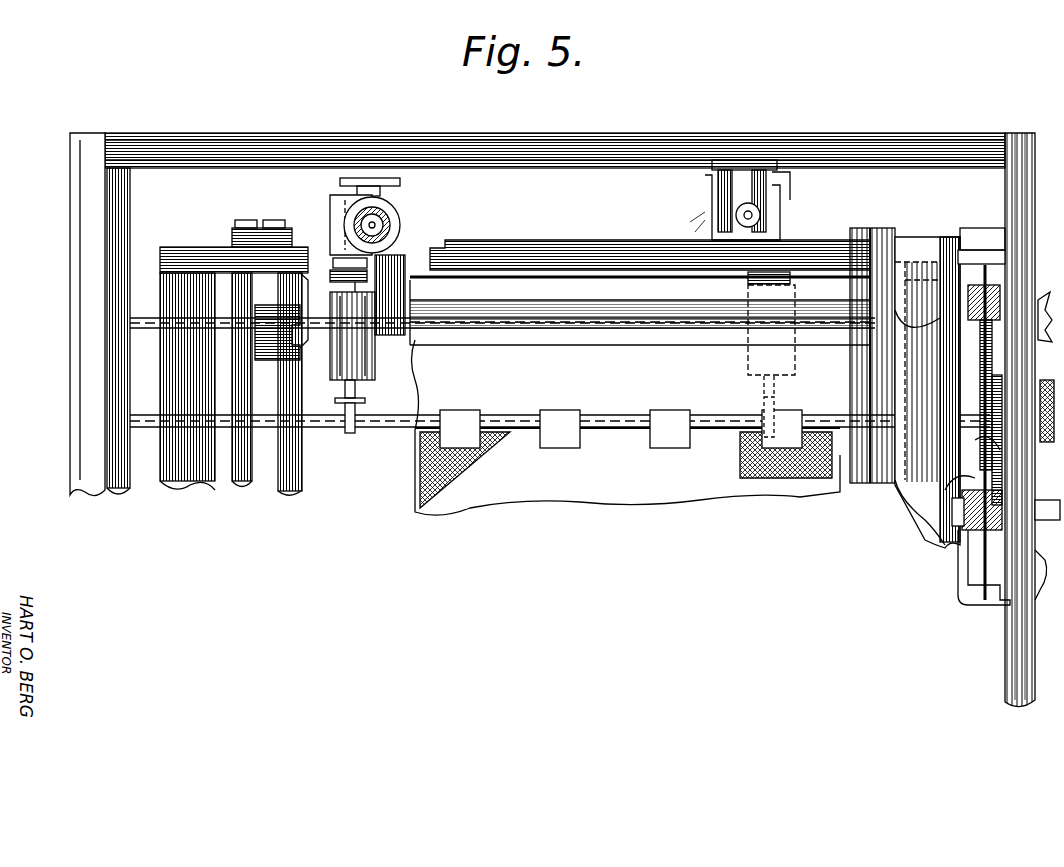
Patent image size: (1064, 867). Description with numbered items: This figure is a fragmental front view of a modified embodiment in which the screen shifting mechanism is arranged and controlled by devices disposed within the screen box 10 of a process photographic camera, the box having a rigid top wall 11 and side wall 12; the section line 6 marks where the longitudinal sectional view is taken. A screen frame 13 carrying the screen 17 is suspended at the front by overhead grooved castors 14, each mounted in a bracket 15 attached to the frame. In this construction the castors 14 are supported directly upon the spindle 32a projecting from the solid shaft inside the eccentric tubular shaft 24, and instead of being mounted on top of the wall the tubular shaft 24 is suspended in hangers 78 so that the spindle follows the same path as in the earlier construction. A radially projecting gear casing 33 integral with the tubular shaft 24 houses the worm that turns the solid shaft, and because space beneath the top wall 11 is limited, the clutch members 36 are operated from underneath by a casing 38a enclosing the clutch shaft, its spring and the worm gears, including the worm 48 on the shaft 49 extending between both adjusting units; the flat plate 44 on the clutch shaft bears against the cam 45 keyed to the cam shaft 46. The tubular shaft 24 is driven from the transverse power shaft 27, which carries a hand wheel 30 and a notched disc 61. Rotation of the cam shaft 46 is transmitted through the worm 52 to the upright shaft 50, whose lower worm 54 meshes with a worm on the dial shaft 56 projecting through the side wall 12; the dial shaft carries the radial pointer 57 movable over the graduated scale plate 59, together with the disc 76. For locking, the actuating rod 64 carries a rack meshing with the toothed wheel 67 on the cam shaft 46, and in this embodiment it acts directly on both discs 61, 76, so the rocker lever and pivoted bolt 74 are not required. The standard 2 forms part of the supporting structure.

The section line 6— 6 is at (740, 170).
The top wall 11 is at (522, 160).
The side wall 12 is at (70, 400).
The screen frame 13 is at (580, 345).
The screen box 10 is at (600, 427).
The screen 17 is at (420, 492).
The hanger 78 is at (385, 187).
The gear casing 33 is at (330, 218).
The tubular shaft 24 is at (360, 201).
The spindle 32a is at (374, 224).
The clutch 36 is at (330, 280).
The casing 38a is at (375, 355).
The flat plate 44 is at (335, 400).
The cam 45 is at (355, 412).
The cam shaft 46 is at (775, 402).
The worm 48 is at (410, 336).
The shaft 49 is at (318, 430).
The grooved castor 14 is at (712, 176).
The bracket 15 is at (778, 180).
The standard 2 is at (927, 376).
The worm 52 is at (948, 322).
The power shaft 27 is at (975, 264).
The disc 61 is at (1000, 228).
The hand wheel 30 is at (1042, 300).
The locking rod 64 is at (990, 348).
The upright shaft 50 is at (983, 368).
The toothed wheel 67 is at (993, 395).
The pivoted bolt 74 is at (982, 440).
The disc 76 is at (960, 470).
The worm 54 is at (975, 500).
The dial shaft 56 is at (945, 530).
The radial pointer 57 is at (1035, 538).
The scale plate 59 is at (1048, 580).